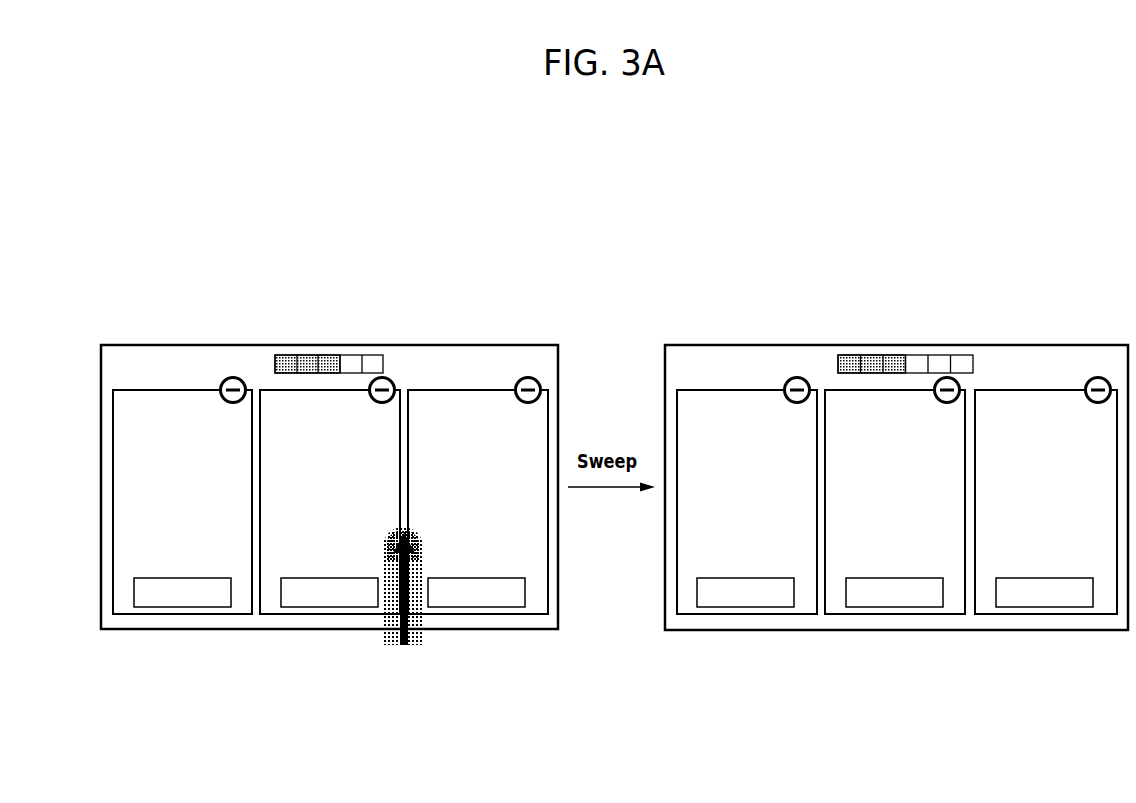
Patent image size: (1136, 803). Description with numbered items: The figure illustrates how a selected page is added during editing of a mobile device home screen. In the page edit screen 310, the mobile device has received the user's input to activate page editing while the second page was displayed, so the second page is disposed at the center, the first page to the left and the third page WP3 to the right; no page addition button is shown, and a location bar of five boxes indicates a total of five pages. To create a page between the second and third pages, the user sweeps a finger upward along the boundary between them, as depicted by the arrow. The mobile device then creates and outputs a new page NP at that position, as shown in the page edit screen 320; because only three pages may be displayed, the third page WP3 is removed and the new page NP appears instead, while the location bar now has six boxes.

The page edit screen 310 is at (494, 345).
The page edit screen 320 is at (1063, 345).
The third page WP3 is at (478, 496).
The new page NP is at (1046, 496).